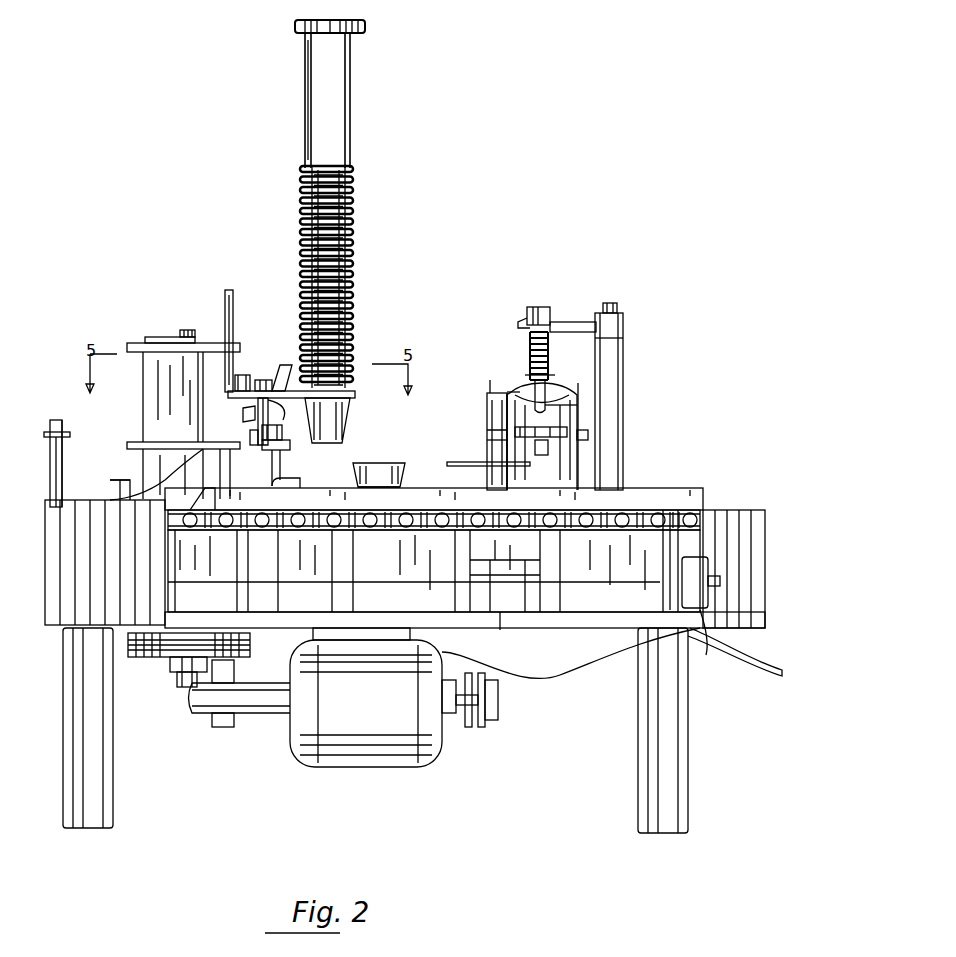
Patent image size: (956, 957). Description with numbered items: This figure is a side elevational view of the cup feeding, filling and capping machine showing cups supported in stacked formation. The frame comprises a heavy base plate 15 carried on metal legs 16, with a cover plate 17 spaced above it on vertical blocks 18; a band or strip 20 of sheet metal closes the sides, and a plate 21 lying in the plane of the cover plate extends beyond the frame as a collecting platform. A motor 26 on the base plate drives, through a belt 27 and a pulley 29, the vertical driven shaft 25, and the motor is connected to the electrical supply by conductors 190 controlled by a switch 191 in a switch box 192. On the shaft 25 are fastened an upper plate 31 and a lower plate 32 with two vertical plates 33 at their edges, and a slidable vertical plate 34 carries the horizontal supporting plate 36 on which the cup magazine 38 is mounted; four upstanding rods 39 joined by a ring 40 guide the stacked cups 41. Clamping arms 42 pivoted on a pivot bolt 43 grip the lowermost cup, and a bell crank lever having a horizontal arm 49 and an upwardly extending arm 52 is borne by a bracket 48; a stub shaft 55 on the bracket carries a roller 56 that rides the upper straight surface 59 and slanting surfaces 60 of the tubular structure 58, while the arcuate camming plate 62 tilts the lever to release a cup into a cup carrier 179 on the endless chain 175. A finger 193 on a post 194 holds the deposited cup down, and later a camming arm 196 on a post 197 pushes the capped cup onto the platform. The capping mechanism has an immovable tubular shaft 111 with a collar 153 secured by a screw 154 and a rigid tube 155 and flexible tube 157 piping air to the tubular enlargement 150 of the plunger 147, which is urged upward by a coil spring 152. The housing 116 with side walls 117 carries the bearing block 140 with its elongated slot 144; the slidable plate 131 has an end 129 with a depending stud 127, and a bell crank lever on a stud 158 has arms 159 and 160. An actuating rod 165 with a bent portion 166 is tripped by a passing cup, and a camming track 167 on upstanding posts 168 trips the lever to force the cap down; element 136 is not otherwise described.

The ring 40 is at (365, 26).
The upstanding spaced rods 39 is at (305, 78).
The cup magazine 38 is at (370, 138).
The cups 41 is at (353, 248).
The clamping arms 42 is at (355, 392).
The upwardly extending arm of bell crank lever 52 is at (283, 365).
The horizontal supporting plate 36 is at (245, 375).
The pivot bolt 43 is at (262, 380).
The slidable vertical plate 34 is at (233, 305).
The upper plate 31 is at (135, 343).
The driven shaft 25 is at (186, 330).
The vertical plates 33 is at (143, 402).
The lower plate 32 is at (135, 442).
The horizontal arm of bell crank lever 49 is at (258, 405).
The bracket 48 is at (243, 414).
The upper straight surface 59 is at (258, 440).
The stub shaft 55 is at (282, 434).
The roller 56 is at (290, 446).
The tubular structure 58 is at (280, 462).
The bent portion 166 is at (295, 482).
The downwardly slanting surfaces 60 is at (160, 470).
The arcuate camming plate 62 is at (128, 478).
The post 194 is at (55, 420).
The finger 193 is at (66, 434).
The post 197 is at (62, 460).
The cover plate 17 is at (95, 500).
The collecting platform plate 21 is at (700, 490).
The vertical blocks 18 is at (335, 545).
The actuating rod 165 is at (430, 570).
The camming track 167 is at (495, 560).
The upstanding posts 168 is at (498, 612).
The base plate 15 is at (525, 628).
The band or strip 20 is at (765, 560).
The switch 191 is at (720, 581).
The switch box 192 is at (706, 655).
The conductors 190 is at (580, 677).
The legs 16 is at (113, 770).
The belt 27 is at (250, 645).
The pulley 29 is at (145, 657).
The motor 26 is at (370, 767).
The cup carriers 179 is at (395, 445).
The endless chain 175 is at (428, 500).
The camming arm 196 is at (465, 462).
The stud 158 is at (487, 405).
The lever arm 159 is at (490, 380).
The lever arm 160 is at (487, 440).
The side walls 117 is at (500, 430).
The end of plate 129 is at (512, 392).
The bearing block 140 is at (570, 395).
The plunger 147 is at (535, 392).
The elongated slot 144 is at (577, 405).
The slidable plate 131 is at (567, 430).
The block 136 is at (588, 435).
The stud 127 is at (548, 447).
The housing 116 is at (580, 390).
The coil spring 152 is at (530, 345).
The flexible tube 157 is at (522, 325).
The tubular enlargement 150 is at (540, 307).
The rigid tube 155 is at (580, 322).
The screw 154 is at (612, 303).
The collar 153 is at (623, 325).
The tubular shaft 111 is at (623, 372).